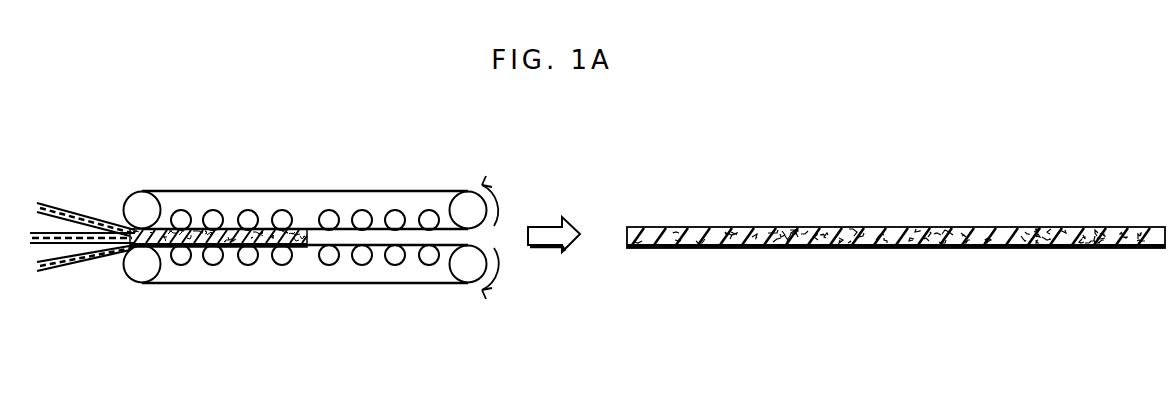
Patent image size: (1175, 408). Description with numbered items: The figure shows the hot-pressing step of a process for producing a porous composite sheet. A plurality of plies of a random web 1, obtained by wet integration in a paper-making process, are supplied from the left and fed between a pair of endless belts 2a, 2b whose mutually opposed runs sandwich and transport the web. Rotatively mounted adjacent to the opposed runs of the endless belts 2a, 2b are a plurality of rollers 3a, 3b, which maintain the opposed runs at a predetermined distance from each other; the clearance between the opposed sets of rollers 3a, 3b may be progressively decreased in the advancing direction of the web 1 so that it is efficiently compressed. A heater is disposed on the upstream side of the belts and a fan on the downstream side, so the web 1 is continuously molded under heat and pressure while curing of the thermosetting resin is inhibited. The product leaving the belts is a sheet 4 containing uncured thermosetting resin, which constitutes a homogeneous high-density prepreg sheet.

The random web 1 is at (65, 211).
The endless belt 2a is at (200, 190).
The endless belt 2b is at (197, 285).
The rollers 3a is at (273, 212).
The rollers 3b is at (273, 262).
The sheet 4 is at (988, 227).